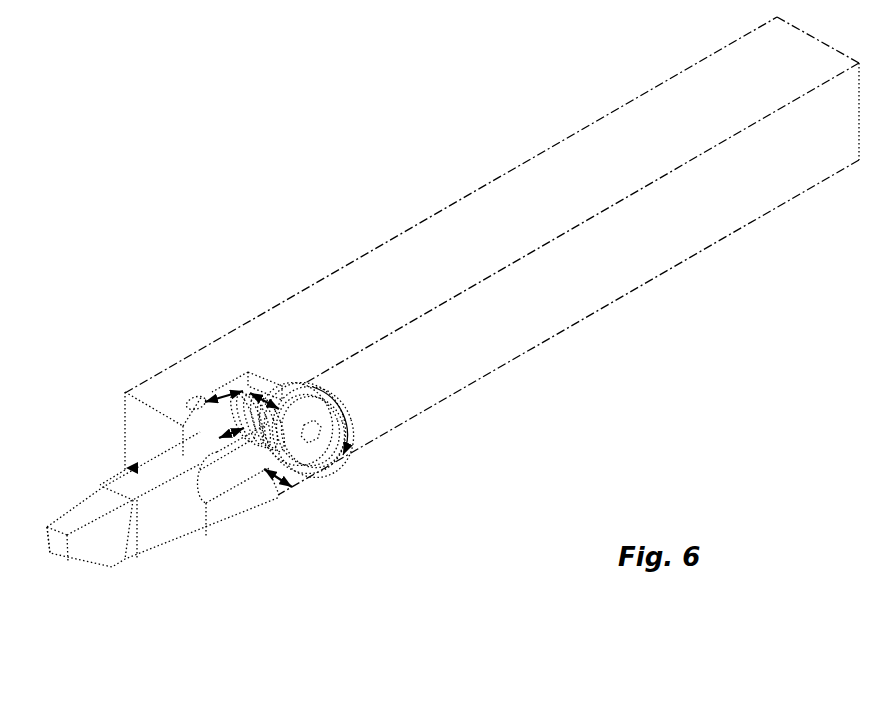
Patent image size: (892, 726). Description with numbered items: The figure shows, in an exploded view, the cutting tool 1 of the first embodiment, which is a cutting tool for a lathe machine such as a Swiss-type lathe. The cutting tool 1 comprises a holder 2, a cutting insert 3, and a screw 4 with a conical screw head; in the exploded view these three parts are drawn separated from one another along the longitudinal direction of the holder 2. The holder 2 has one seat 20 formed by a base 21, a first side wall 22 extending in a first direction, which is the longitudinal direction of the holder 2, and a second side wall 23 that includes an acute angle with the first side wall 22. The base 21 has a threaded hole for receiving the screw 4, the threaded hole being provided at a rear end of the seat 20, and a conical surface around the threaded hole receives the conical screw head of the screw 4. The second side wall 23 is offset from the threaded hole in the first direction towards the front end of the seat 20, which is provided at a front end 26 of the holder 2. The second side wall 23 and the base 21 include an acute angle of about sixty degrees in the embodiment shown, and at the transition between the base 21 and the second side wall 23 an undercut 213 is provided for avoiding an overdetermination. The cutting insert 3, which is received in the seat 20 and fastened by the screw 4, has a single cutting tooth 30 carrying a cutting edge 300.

The cutting tool 1 is at (146, 122).
The holder 2 is at (494, 208).
The cutting insert 3 is at (143, 571).
The cutting tooth 30 is at (78, 579).
The cutting edge 300 is at (59, 529).
The front end 26 is at (133, 423).
The undercut 213 is at (200, 392).
The base 21 is at (249, 374).
The second side wall 23 is at (200, 430).
The first side wall 22 is at (229, 473).
The screw 4 is at (304, 463).
The seat 20 is at (280, 503).